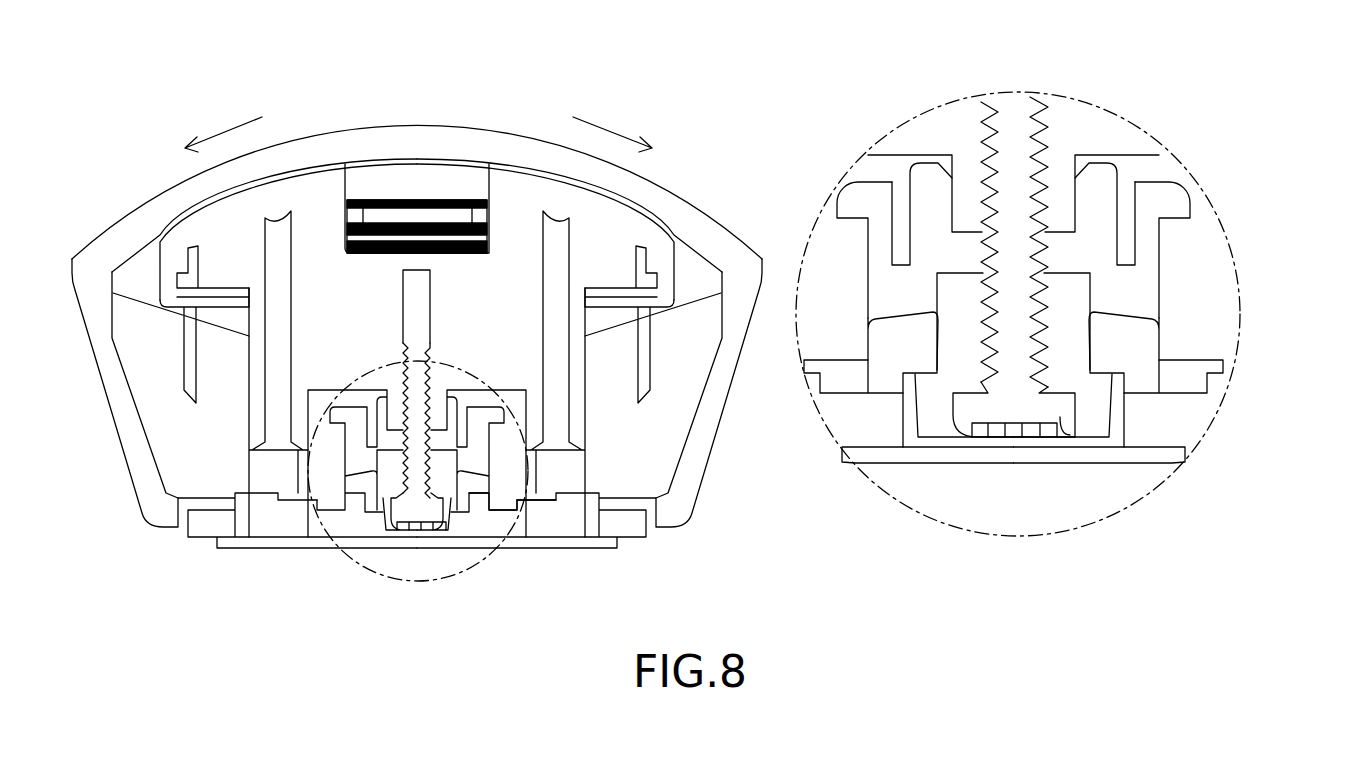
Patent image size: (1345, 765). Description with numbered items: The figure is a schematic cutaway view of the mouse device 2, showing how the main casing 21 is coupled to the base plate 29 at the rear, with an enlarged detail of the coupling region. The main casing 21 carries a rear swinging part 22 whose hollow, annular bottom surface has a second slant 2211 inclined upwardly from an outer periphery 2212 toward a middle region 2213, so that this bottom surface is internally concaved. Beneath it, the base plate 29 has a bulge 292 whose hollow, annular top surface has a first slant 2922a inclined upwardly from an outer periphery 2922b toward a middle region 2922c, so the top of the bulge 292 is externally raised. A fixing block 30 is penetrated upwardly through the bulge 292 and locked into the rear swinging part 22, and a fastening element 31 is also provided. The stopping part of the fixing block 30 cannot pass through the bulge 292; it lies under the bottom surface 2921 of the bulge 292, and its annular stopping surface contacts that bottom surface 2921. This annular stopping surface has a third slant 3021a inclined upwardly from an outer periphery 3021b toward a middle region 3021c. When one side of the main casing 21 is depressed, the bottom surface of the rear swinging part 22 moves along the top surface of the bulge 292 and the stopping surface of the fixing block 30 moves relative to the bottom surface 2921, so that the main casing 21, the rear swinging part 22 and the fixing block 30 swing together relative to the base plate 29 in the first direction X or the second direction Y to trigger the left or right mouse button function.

The mouse device 2 is at (737, 178).
The main casing 21 is at (453, 125).
The rear swinging part 22 is at (521, 428).
The base plate 29 is at (624, 526).
The bulge 292 is at (493, 500).
The fixing block 30 is at (440, 478).
The fastening element 31 is at (410, 515).
The second slant 2211 is at (885, 285).
The outer periphery of the bottom surface of the rear swinging part 2212 is at (900, 302).
The middle region of the bottom surface of the rear swinging part 2213 is at (906, 245).
The bottom surface of the bulge 2921 is at (1108, 376).
The first slant 2922a is at (1150, 318).
The outer periphery of the top surface of the bulge 2922b is at (1157, 330).
The middle region of the top surface of the bulge 2922c is at (1077, 272).
The third slant 3021a is at (913, 380).
The outer periphery of the annular stopping surface 3021b is at (963, 370).
The middle region of the annular stopping surface 3021c is at (985, 395).